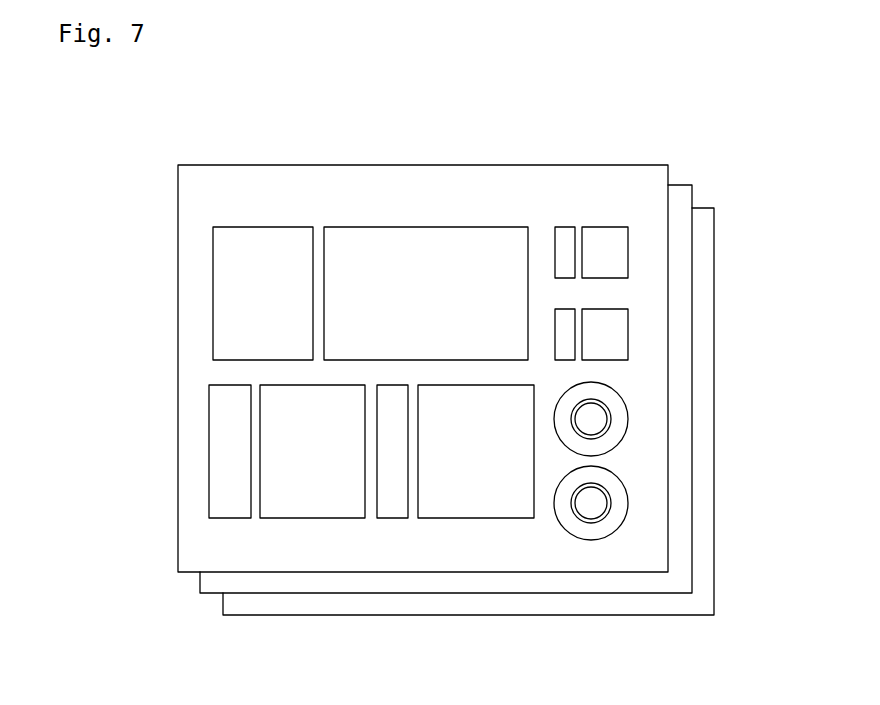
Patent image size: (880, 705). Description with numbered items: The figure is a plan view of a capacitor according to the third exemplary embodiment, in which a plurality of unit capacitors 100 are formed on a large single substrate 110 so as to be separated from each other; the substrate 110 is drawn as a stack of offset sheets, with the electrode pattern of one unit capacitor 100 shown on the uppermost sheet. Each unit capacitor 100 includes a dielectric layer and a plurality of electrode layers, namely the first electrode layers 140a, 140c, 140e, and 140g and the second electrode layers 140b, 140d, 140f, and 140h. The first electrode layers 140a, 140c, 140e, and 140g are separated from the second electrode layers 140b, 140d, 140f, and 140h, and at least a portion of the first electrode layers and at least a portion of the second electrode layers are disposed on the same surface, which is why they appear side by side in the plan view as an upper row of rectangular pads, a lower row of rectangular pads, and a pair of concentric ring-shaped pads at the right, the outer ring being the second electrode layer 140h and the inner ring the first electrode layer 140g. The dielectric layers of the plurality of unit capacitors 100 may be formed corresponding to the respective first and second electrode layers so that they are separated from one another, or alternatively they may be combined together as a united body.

The unit capacitor 100 is at (485, 209).
The substrate 110 is at (630, 178).
The first electrode layer 140a is at (247, 292).
The second electrode layer 140b is at (368, 240).
The first electrode layer 140c is at (225, 444).
The second electrode layer 140d is at (309, 495).
The first electrode layer 140e is at (563, 237).
The second electrode layer 140f is at (607, 243).
The first electrode layer 140g is at (593, 422).
The second electrode layer 140h is at (607, 393).